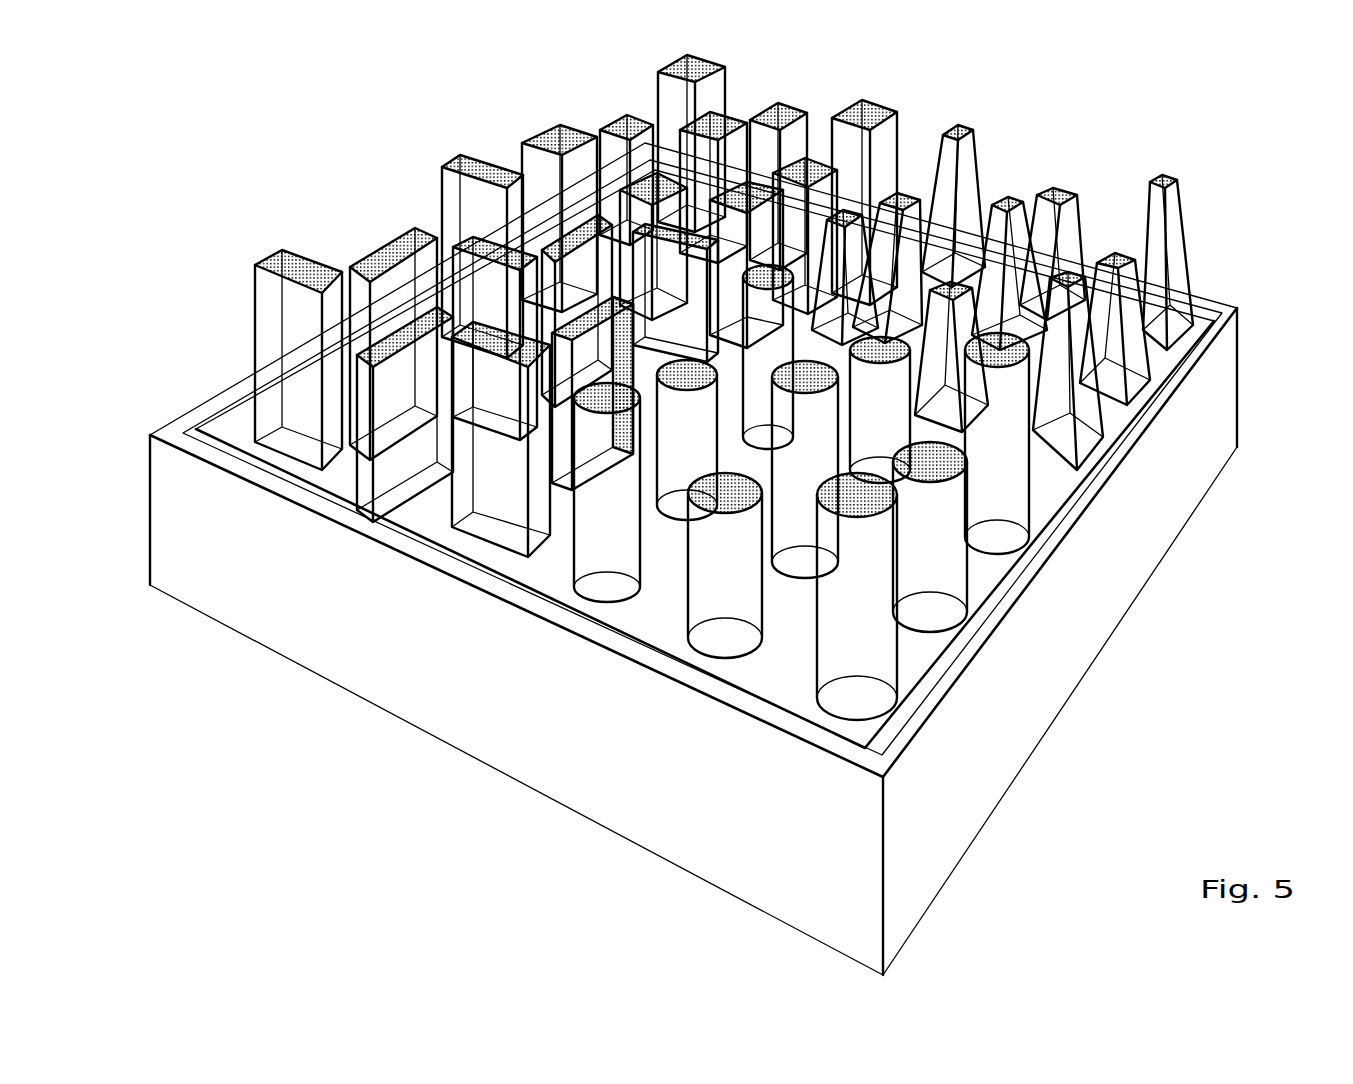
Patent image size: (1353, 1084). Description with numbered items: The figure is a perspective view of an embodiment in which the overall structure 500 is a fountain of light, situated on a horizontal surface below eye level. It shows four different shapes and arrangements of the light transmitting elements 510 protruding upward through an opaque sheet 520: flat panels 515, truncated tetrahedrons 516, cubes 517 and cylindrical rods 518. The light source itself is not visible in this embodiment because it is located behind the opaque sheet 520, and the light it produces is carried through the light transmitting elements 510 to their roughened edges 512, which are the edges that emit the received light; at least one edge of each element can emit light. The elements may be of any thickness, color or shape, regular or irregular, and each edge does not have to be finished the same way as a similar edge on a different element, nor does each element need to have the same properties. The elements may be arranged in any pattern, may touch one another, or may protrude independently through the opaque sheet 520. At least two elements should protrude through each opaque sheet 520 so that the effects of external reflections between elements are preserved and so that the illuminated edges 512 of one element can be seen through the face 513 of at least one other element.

The overall structure 500 is at (318, 185).
The light transmitting elements 510 is at (722, 387).
The roughened edges 512 is at (873, 104).
The face 513 is at (615, 488).
The flat panels 515 is at (253, 308).
The truncated tetrahedrons 516 is at (1187, 230).
The cubes 517 is at (724, 88).
The cylindrical rods 518 is at (1030, 487).
The opaque sheet 520 is at (1237, 393).